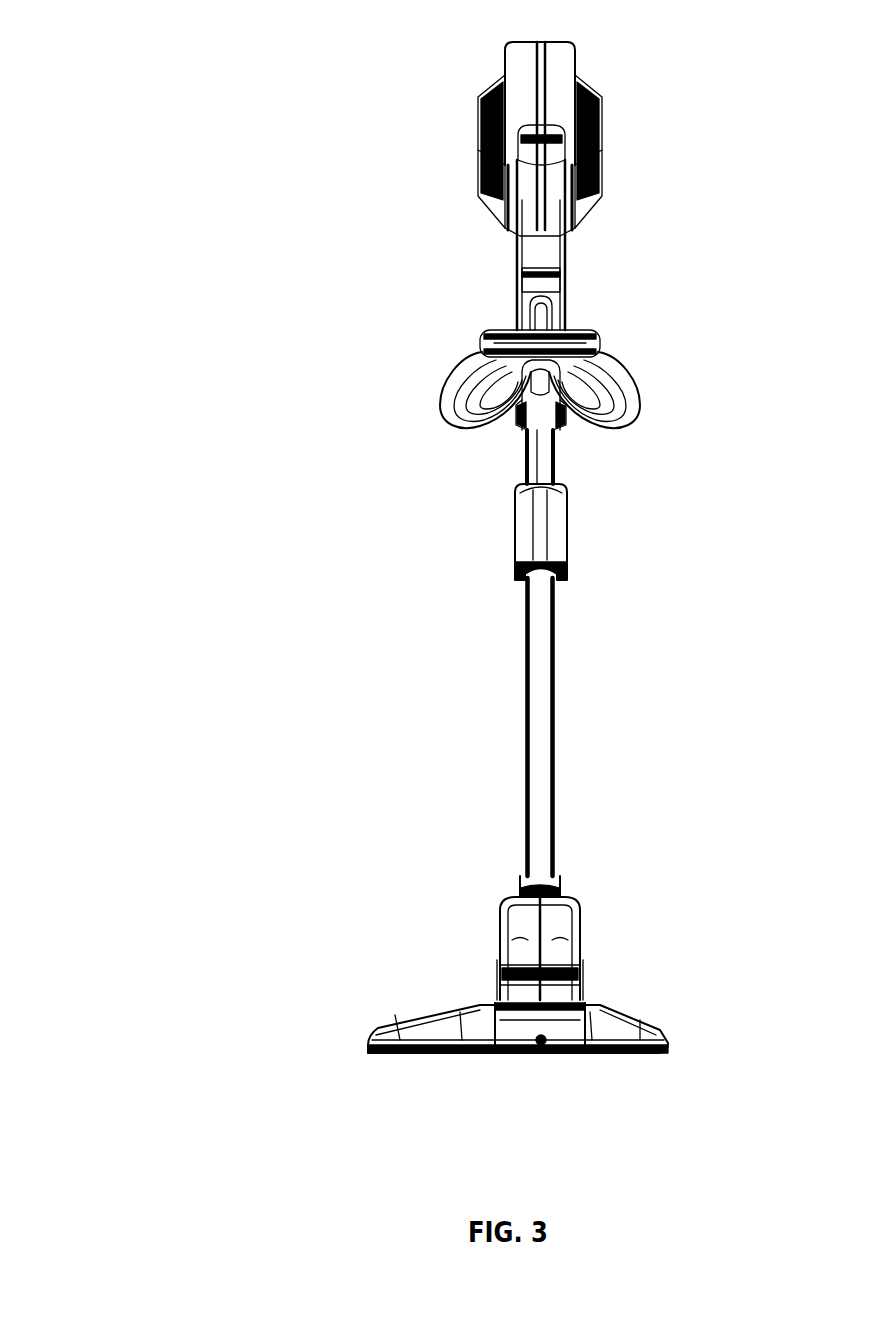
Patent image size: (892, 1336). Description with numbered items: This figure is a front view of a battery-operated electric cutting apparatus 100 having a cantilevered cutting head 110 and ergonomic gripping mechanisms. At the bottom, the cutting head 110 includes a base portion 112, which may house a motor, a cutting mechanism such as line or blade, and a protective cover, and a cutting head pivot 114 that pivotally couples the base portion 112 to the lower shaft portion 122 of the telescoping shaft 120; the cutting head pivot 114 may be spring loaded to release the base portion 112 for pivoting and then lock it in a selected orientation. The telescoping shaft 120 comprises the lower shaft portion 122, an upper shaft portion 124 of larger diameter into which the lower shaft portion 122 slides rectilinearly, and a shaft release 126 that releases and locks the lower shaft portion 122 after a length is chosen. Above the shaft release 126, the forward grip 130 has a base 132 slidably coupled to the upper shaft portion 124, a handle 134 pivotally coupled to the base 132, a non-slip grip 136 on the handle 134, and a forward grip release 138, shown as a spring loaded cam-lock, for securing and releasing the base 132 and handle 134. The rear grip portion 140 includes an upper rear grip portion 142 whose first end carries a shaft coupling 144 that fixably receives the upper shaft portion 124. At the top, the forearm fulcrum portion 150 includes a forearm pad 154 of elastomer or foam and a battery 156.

The battery-operated electric cutting apparatus 100 is at (172, 90).
The cutting head 110 is at (705, 1005).
The base portion 112 is at (540, 1058).
The cutting head pivot 114 is at (500, 949).
The telescoping shaft 120 is at (675, 626).
The lower shaft portion 122 is at (538, 735).
The upper shaft portion 124 is at (548, 460).
The shaft release 126 is at (538, 527).
The forward grip 130 is at (743, 400).
The base 132 is at (518, 416).
The handle 134 is at (620, 384).
The grip 136 is at (486, 338).
The forward grip release 138 is at (577, 419).
The rear grip portion 140 is at (721, 256).
The upper rear grip portion 142 is at (548, 205).
The shaft coupling 144 is at (552, 286).
The forearm fulcrum portion 150 is at (665, 106).
The forearm pad 154 is at (548, 67).
The battery 156 is at (480, 128).